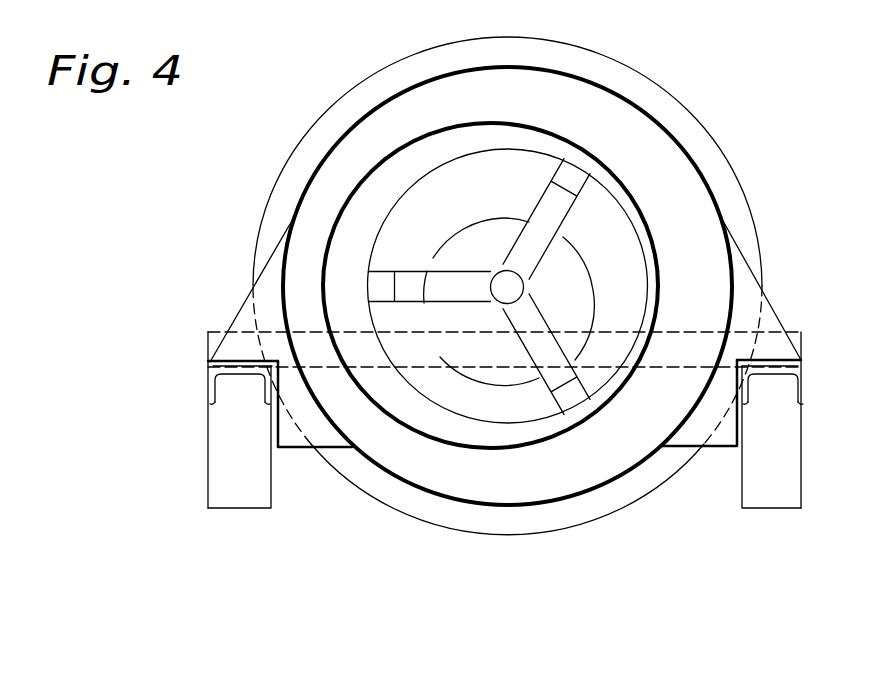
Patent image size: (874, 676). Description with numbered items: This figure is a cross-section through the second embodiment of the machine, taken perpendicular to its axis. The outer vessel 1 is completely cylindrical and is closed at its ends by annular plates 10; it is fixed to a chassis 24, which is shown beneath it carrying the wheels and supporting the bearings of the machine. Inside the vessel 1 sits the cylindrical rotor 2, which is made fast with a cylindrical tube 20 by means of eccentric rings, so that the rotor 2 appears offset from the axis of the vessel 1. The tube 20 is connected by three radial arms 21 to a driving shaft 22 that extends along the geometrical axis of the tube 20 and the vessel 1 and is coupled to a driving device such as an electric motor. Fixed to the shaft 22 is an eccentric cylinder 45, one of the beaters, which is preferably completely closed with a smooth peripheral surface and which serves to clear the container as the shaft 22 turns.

The vessel 1 is at (620, 88).
The rotor 2 is at (438, 128).
The annular plate 10 is at (735, 170).
The cylindrical tube 20 is at (427, 177).
The radial arm 21 is at (547, 236).
The driving shaft 22 is at (509, 298).
The chassis 24 is at (790, 418).
The eccentric cylinder 45 is at (470, 227).